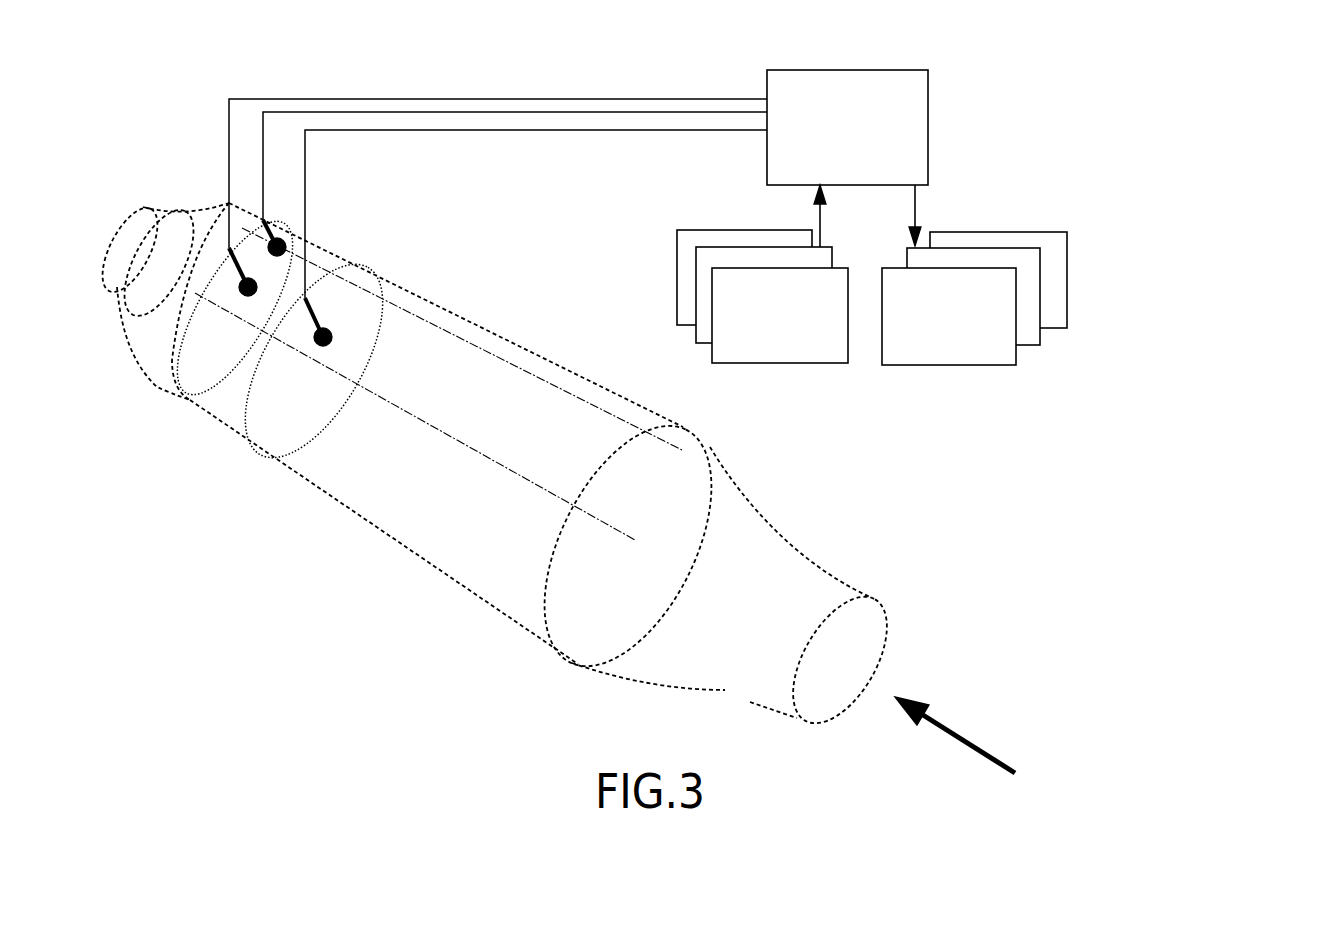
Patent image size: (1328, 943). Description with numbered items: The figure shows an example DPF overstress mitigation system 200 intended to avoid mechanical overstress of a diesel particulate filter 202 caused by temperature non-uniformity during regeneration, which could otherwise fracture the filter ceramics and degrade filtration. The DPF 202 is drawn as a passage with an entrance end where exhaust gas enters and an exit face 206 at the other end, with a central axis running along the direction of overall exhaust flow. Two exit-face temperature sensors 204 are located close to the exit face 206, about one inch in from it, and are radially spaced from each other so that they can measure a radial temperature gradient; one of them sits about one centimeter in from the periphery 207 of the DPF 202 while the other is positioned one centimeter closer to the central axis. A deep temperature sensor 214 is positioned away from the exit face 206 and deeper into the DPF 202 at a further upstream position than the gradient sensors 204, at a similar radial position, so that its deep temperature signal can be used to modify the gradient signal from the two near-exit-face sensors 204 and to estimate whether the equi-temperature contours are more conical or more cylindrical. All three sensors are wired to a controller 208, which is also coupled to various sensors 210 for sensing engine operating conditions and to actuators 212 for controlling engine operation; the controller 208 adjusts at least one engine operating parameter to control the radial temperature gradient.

The DPF overstress mitigation system 200 is at (694, 428).
The diesel particulate filter 202 is at (440, 303).
The temperature sensors 204 is at (287, 238).
The exit face 206 is at (128, 342).
The periphery 207 is at (523, 347).
The controller 208 is at (928, 97).
The sensors 210 is at (697, 228).
The actuators 212 is at (1040, 232).
The deep temperature sensor 214 is at (333, 335).